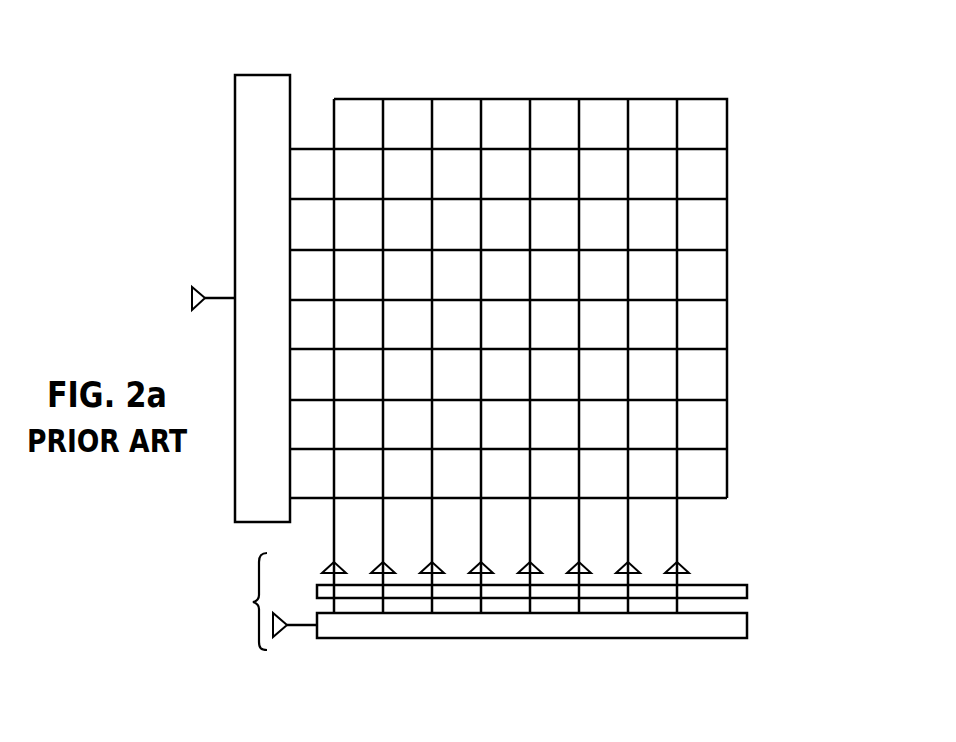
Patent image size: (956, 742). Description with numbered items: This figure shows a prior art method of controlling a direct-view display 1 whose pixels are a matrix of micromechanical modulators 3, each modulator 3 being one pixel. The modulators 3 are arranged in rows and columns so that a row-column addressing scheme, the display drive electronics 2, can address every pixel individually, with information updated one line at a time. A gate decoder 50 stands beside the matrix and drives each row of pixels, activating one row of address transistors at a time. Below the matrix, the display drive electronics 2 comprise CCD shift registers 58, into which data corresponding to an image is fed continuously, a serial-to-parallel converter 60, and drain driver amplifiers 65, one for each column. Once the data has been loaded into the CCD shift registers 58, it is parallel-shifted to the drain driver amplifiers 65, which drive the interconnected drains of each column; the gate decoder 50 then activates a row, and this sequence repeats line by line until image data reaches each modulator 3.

The display 1 is at (348, 54).
The display drive electronics 2 is at (254, 602).
The micromechanical modulators 3 is at (706, 110).
The gate decoder 50 is at (235, 212).
The CCD shift registers 58 is at (518, 638).
The serial-to-parallel converter 60 is at (747, 591).
The drain driver amplifiers 65 is at (689, 567).